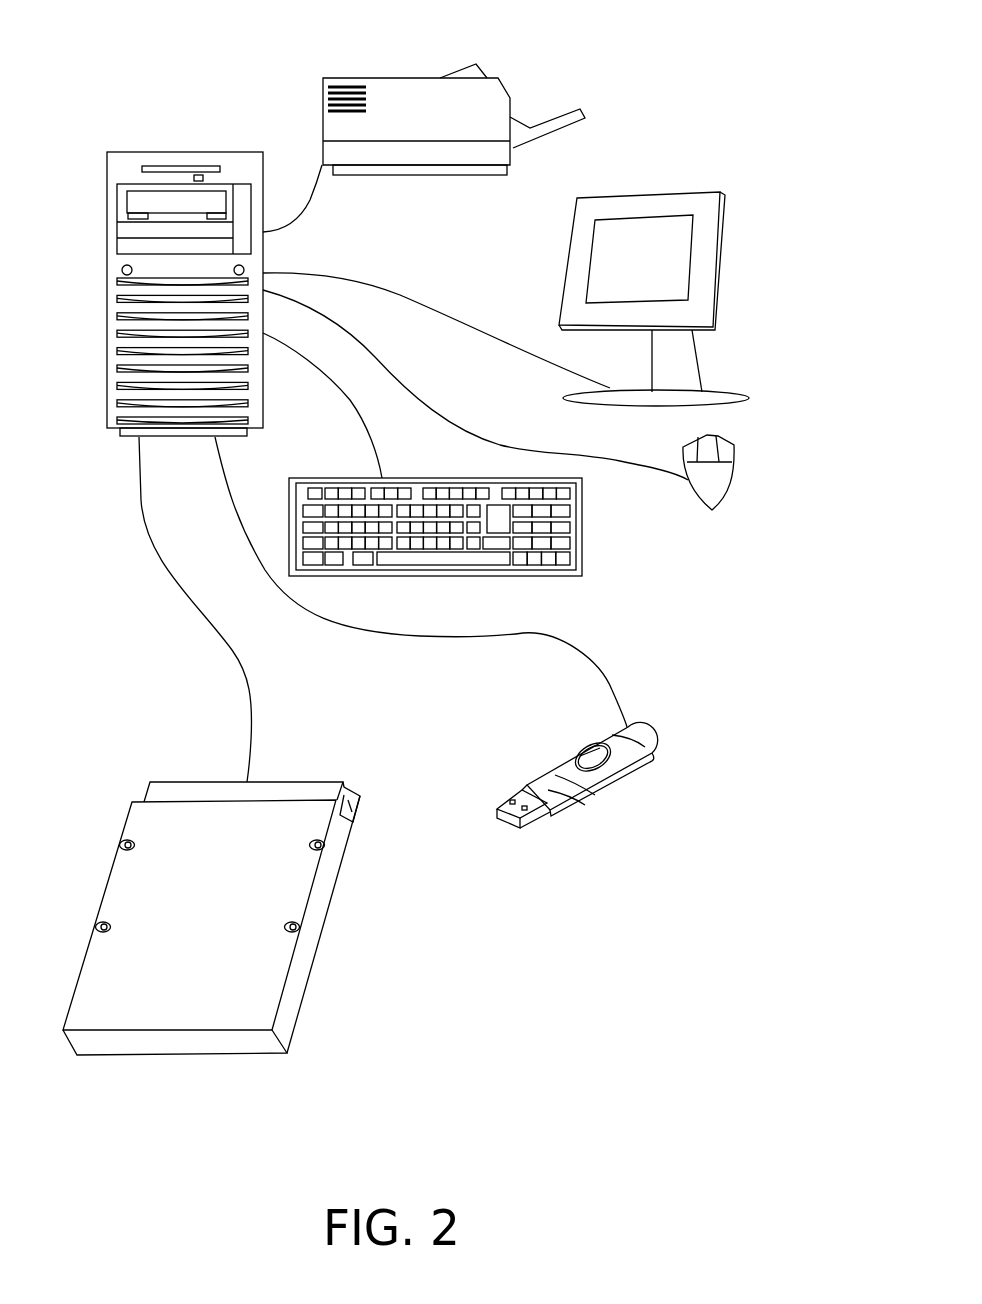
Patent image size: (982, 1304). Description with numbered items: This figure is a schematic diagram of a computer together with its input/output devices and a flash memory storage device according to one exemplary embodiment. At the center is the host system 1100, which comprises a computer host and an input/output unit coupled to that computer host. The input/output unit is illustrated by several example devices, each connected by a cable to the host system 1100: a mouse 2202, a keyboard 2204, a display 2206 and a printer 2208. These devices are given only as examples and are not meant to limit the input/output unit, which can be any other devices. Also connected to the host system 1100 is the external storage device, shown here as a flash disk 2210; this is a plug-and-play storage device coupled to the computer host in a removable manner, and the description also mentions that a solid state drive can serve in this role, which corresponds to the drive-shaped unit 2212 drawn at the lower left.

The host system 1100 is at (187, 152).
The mouse 2202 is at (734, 480).
The keyboard 2204 is at (582, 542).
The display 2206 is at (658, 193).
The printer 2208 is at (410, 78).
The flash disk 2210 is at (570, 755).
The hard disk drive 2212 is at (331, 771).